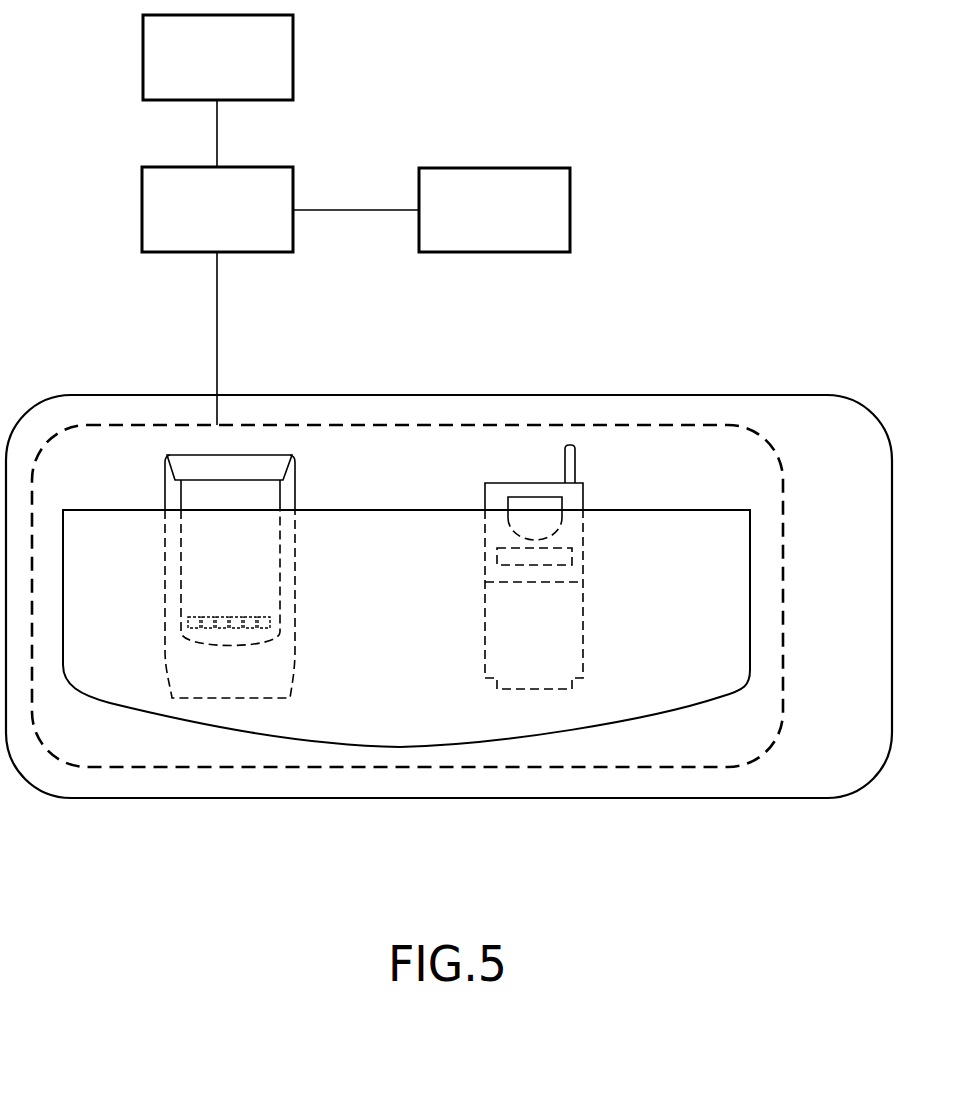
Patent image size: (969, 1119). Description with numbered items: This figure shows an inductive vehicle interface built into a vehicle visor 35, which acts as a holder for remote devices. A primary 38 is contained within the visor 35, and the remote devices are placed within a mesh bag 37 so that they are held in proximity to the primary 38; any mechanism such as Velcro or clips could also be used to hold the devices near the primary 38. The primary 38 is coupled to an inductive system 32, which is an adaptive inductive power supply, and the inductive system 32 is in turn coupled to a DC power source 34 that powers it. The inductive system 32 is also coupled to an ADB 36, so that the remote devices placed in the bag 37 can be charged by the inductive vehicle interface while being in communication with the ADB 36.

The inductive system 32 is at (142, 208).
The DC power source 34 is at (293, 60).
The vehicle visor 35 is at (668, 395).
The ADB 36 is at (570, 210).
The bag 37 is at (783, 510).
The primary 38 is at (413, 767).